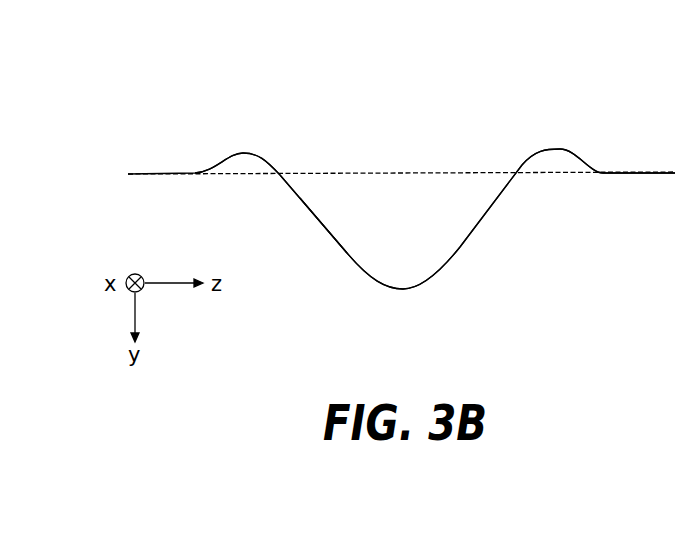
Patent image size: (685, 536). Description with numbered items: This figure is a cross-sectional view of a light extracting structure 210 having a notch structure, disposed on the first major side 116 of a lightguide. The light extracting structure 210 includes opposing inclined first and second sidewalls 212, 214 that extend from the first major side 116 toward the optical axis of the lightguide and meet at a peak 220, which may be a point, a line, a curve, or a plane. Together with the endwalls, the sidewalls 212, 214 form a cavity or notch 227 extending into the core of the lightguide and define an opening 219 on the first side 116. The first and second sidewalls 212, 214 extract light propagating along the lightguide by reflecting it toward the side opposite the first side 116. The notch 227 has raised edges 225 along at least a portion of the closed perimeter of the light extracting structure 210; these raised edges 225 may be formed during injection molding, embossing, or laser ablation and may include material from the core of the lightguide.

The light extracting structure 210 is at (221, 76).
The opening 219 is at (392, 172).
The raised edges 225 is at (271, 165).
The first major side 116 is at (650, 172).
The first sidewall 212 is at (307, 208).
The second sidewall 214 is at (495, 202).
The notch 227 is at (365, 247).
The peak 220 is at (403, 289).